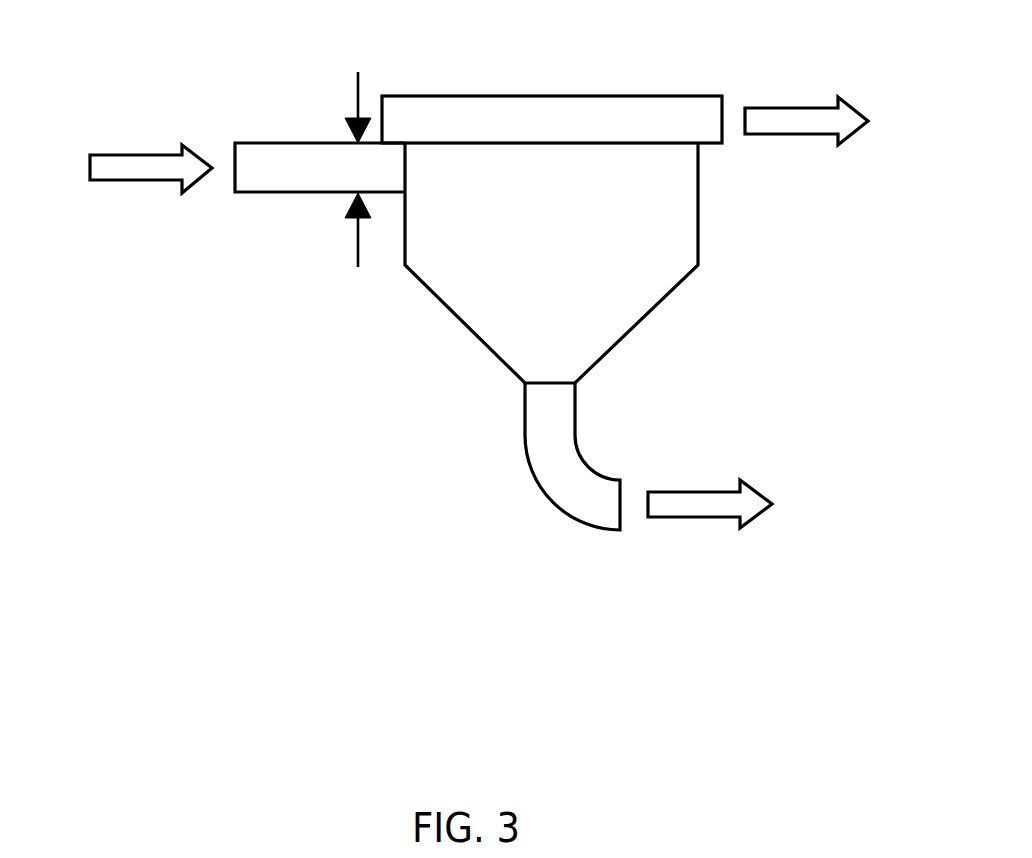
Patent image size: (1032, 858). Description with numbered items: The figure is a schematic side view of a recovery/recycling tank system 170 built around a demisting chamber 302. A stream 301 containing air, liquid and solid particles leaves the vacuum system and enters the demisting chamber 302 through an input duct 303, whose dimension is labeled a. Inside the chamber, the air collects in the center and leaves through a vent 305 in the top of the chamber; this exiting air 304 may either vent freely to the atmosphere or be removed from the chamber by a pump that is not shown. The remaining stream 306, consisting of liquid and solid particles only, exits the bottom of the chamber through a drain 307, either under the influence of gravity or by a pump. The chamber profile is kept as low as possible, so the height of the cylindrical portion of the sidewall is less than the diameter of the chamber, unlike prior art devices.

The recovery/recycling tank system 170 is at (172, 80).
The stream 301 is at (140, 192).
The demisting chamber 302 is at (697, 217).
The input duct 303 is at (308, 193).
The exiting air 304 is at (793, 98).
The vent 305 is at (577, 95).
The stream 306 is at (720, 480).
The drain 307 is at (525, 408).